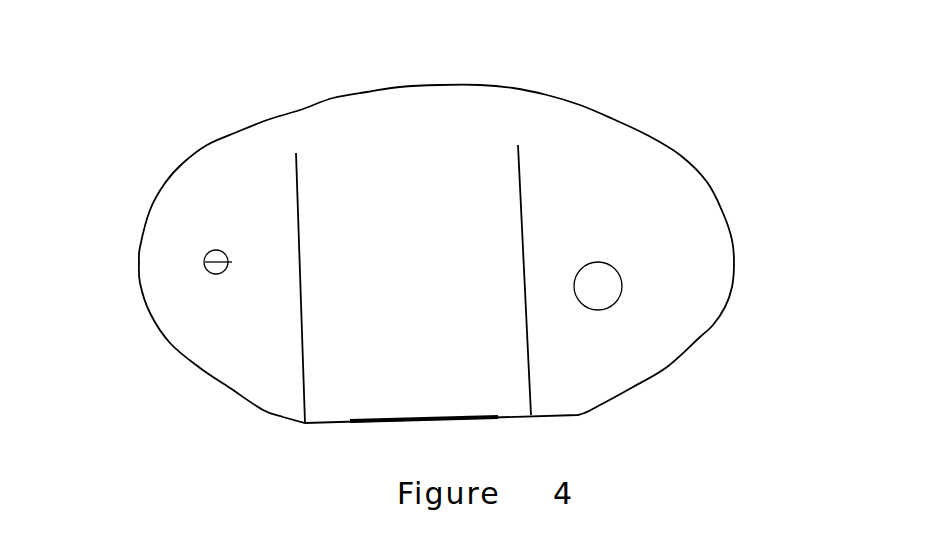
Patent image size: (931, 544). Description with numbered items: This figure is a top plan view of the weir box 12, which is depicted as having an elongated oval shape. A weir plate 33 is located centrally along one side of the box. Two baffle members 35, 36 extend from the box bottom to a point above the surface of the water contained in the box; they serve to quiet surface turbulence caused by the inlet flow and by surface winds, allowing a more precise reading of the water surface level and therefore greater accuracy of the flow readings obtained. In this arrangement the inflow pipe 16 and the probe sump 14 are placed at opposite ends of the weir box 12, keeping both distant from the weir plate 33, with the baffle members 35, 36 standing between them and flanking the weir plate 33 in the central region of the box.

The weir box 12 is at (708, 181).
The probe sump 14 is at (212, 275).
The inflow pipe 16 is at (622, 287).
The weir plate 33 is at (387, 427).
The baffle member 35 is at (295, 193).
The baffle member 36 is at (522, 183).